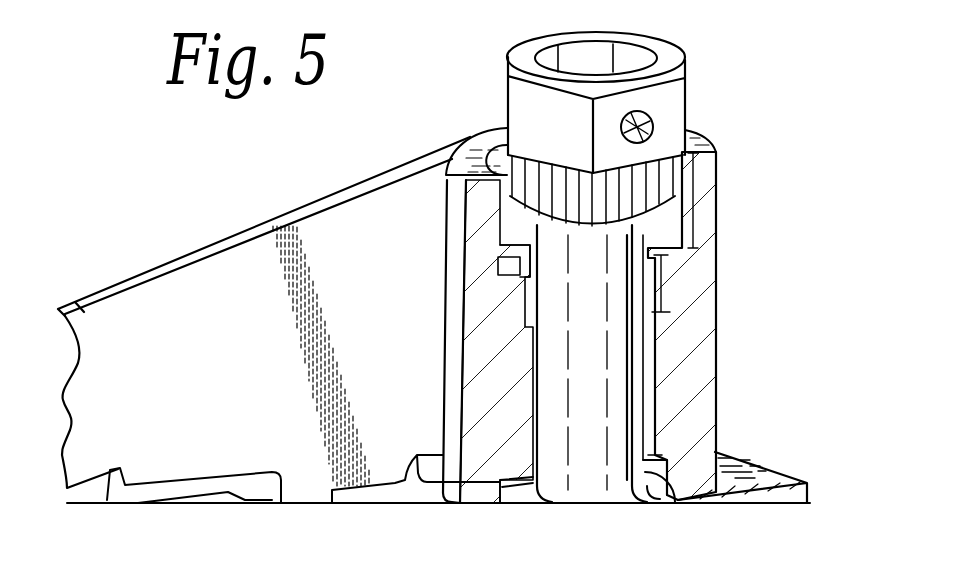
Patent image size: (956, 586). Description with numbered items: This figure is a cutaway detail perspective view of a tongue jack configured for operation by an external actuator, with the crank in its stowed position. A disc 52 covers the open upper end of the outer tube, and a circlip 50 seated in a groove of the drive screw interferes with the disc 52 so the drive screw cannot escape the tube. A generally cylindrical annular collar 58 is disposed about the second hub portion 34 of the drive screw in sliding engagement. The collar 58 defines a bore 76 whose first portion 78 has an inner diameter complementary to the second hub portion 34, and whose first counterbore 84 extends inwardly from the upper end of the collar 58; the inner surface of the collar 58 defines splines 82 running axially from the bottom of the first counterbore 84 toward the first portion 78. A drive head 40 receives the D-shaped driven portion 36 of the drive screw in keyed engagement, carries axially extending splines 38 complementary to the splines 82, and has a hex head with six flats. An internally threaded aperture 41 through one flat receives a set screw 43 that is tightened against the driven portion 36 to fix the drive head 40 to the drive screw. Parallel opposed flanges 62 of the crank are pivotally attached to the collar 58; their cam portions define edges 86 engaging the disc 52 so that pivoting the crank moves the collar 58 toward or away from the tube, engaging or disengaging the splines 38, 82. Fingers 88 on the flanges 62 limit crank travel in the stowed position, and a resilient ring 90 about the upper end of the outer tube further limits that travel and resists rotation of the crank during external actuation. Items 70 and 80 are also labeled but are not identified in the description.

The second hub portion 34 is at (602, 378).
The driven portion 36 is at (594, 71).
The splines 38 is at (591, 232).
The drive head 40 is at (532, 100).
The aperture 41 is at (648, 126).
The set screw 43 is at (645, 109).
The circlip 50 is at (676, 496).
The disc 52 is at (743, 467).
The collar 58 is at (713, 163).
The flanges 62 is at (234, 367).
The mounting assembly 70 is at (316, 152).
The bore 76 is at (446, 178).
The first portion of the bore 78 is at (657, 347).
The pin 80 is at (670, 282).
The splines 82 is at (500, 272).
The first counterbore 84 is at (695, 222).
The edges 86 is at (282, 468).
The fingers 88 is at (317, 499).
The ring 90 is at (783, 470).